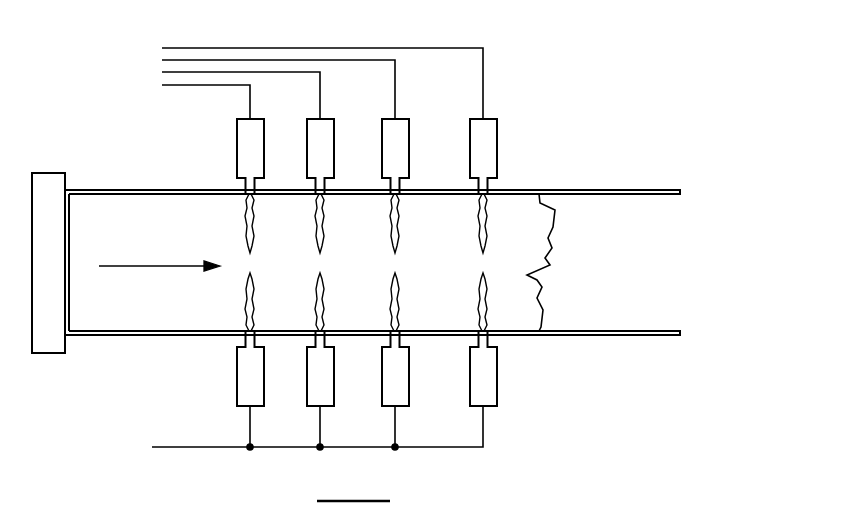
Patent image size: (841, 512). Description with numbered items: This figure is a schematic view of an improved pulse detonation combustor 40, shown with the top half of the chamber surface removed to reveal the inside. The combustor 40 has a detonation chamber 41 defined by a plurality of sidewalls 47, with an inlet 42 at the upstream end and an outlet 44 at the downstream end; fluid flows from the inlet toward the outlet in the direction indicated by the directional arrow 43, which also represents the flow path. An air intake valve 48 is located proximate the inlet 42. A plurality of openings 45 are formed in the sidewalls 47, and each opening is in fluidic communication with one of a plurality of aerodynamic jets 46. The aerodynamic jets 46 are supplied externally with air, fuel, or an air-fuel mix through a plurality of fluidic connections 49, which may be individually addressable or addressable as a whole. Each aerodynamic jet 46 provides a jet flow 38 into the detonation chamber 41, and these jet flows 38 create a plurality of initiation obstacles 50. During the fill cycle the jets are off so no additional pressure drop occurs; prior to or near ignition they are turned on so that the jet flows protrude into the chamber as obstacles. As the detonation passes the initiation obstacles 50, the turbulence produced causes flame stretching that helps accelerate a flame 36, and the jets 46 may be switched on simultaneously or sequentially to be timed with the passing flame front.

The flame 36 is at (563, 192).
The jet flow 38 is at (325, 221).
The improved pulse detonation combustor 40 is at (628, 134).
The detonation chamber 41 is at (606, 284).
The inlet 42 is at (75, 346).
The directional arrow 43 is at (153, 266).
The outlet 44 is at (685, 283).
The openings 45 is at (398, 205).
The aerodynamic jets 46 is at (498, 140).
The sidewalls 47 is at (565, 335).
The air intake valve 48 is at (50, 184).
The fluidic connections 49 is at (428, 47).
The initiation obstacles 50 is at (487, 225).